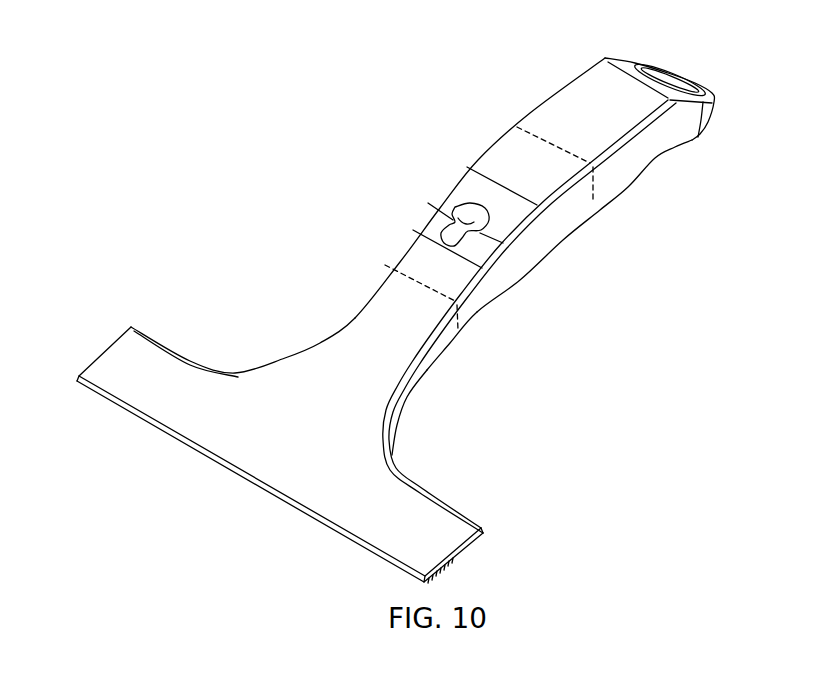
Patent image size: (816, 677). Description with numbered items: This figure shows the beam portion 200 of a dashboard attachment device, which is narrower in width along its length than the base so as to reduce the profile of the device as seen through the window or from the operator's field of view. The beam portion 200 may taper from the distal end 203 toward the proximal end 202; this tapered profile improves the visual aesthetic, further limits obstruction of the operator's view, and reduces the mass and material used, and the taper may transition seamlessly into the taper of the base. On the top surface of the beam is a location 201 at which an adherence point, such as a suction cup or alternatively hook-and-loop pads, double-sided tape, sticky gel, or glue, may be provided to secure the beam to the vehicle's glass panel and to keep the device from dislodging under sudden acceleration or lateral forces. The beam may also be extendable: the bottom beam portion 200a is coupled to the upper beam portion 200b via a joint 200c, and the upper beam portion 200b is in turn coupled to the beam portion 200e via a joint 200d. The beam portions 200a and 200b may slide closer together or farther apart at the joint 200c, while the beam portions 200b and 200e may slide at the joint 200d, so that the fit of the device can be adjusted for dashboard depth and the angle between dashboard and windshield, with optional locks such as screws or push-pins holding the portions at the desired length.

The beam portion 200 is at (334, 113).
The bottom beam portion 200a is at (350, 317).
The upper beam portion 200b is at (527, 243).
The joint 200c is at (458, 318).
The joint 200d is at (597, 215).
The beam portion 200e is at (563, 105).
The location on the top surface of beam 201 is at (430, 215).
The proximal end 202 is at (420, 362).
The distal end 203 is at (643, 153).